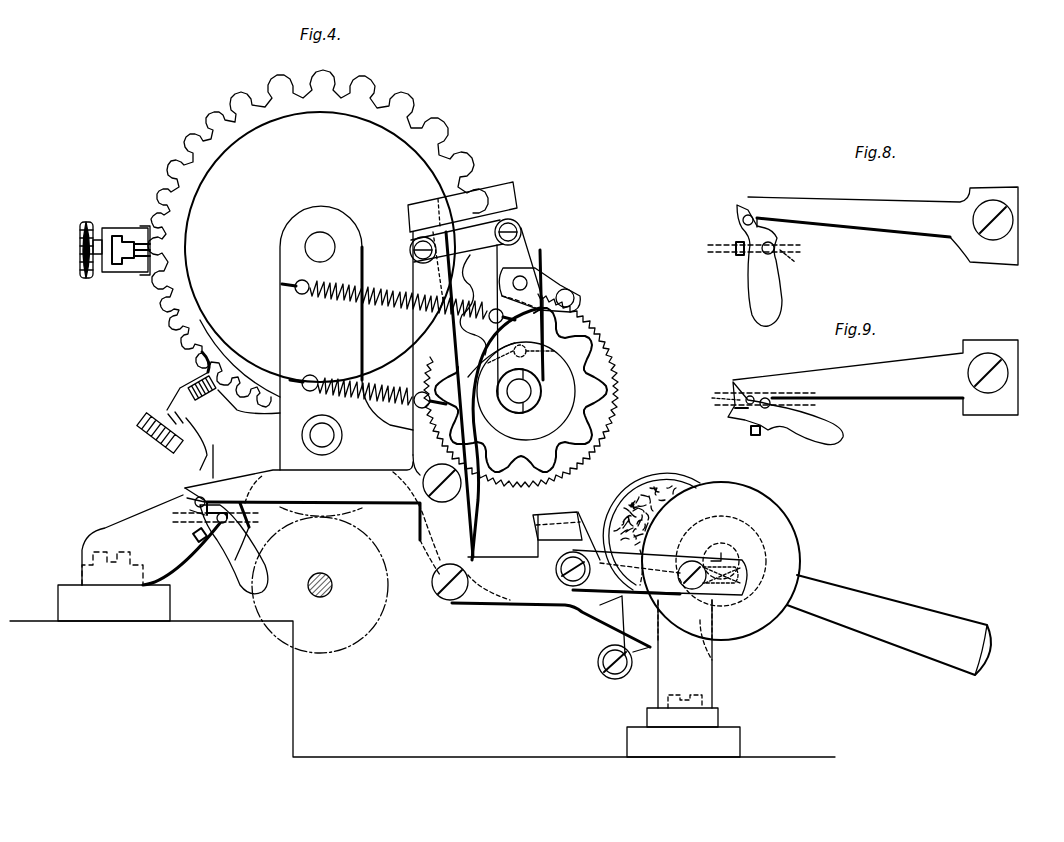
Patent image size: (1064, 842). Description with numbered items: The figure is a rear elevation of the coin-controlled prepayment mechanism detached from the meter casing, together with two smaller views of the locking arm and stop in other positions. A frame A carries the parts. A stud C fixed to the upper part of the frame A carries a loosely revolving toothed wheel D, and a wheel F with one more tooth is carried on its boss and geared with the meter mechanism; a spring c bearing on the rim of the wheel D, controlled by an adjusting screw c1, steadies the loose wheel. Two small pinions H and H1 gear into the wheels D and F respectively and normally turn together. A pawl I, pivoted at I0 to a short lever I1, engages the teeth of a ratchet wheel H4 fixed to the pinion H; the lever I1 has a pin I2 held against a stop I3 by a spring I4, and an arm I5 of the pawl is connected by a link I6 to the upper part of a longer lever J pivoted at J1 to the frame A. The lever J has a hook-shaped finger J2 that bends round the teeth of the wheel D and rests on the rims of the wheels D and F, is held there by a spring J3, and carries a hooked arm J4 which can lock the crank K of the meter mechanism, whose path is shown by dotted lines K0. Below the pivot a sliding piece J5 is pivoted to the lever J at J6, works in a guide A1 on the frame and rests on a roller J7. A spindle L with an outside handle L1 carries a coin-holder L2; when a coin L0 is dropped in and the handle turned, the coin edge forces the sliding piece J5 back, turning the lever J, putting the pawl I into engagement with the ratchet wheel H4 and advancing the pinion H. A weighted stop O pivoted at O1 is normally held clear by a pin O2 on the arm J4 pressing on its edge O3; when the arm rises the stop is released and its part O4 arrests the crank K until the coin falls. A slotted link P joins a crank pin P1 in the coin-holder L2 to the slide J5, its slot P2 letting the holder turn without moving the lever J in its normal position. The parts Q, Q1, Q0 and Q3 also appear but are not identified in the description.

In FIG. 4, the toothed wheel D is at (383, 98).
In FIG. 4, the wheel F is at (407, 100).
In FIG. 4, the stud C is at (331, 240).
In FIG. 4, the spring c is at (200, 368).
In FIG. 4, the adjusting screw c1 is at (168, 418).
In FIG. 4, the adjusting knob Q is at (118, 230).
In FIG. 4, the knob bracket Q1 is at (138, 272).
In FIG. 4, the frame A is at (313, 429).
In FIG. 4, the guide A1 is at (548, 525).
In FIG. 4, the pawl I is at (549, 300).
In FIG. 4, the pivot I0 is at (526, 281).
In FIG. 4, the short lever I1 is at (506, 321).
In FIG. 4, the pin I2 is at (540, 350).
In FIG. 4, the stop I3 is at (487, 316).
In FIG. 4, the spring I4 is at (392, 292).
In FIG. 4, the arm I5 is at (520, 246).
In FIG. 4, the link I6 is at (456, 241).
In FIG. 4, the lever J is at (443, 394).
In FIG. 4, the pivot J1 is at (437, 476).
In FIG. 8, the pivot J1 is at (1013, 210).
In FIG. 9, the pivot J1 is at (1008, 372).
In FIG. 4, the finger J2 is at (462, 207).
In FIG. 4, the spring J3 is at (350, 398).
In FIG. 4, the hooked arm J4 is at (312, 511).
In FIG. 8, the hooked arm J4 is at (883, 226).
In FIG. 9, the hooked arm J4 is at (875, 377).
In FIG. 4, the sliding piece J5 is at (551, 585).
In FIG. 4, the pivot J6 is at (435, 571).
In FIG. 4, the roller J7 is at (600, 660).
In FIG. 4, the pinion H is at (585, 328).
In FIG. 4, the pinion H1 is at (522, 392).
In FIG. 4, the ratchet wheel H4 is at (614, 414).
In FIG. 4, the crank K is at (688, 390).
In FIG. 4, the path of the crank K0 is at (250, 518).
In FIG. 8, the path of the crank K0 is at (790, 258).
In FIG. 9, the path of the crank K0 is at (715, 390).
In FIG. 4, the stop O is at (243, 575).
In FIG. 8, the stop O is at (752, 305).
In FIG. 9, the stop O is at (835, 430).
In FIG. 4, the pivot O1 is at (225, 513).
In FIG. 9, the pivot O1 is at (768, 398).
In FIG. 4, the pin O2 is at (198, 500).
In FIG. 8, the pin O2 is at (746, 217).
In FIG. 9, the pin O2 is at (747, 396).
In FIG. 4, the edge O3 is at (195, 507).
In FIG. 8, the edge O3 is at (765, 236).
In FIG. 9, the edge O3 is at (738, 408).
In FIG. 4, the part of the stop O4 is at (197, 538).
In FIG. 8, the part of the stop O4 is at (740, 255).
In FIG. 9, the part of the stop O4 is at (760, 432).
In FIG. 4, the cam Q0 is at (330, 580).
In FIG. 4, the cam path Q3 is at (352, 508).
In FIG. 4, the spindle L is at (718, 558).
In FIG. 4, the coin L0 is at (650, 490).
In FIG. 4, the handle L1 is at (889, 625).
In FIG. 4, the coin-holder L2 is at (735, 632).
In FIG. 4, the slotted link P is at (651, 572).
In FIG. 4, the crank pin P1 is at (688, 590).
In FIG. 4, the slot P2 is at (745, 577).